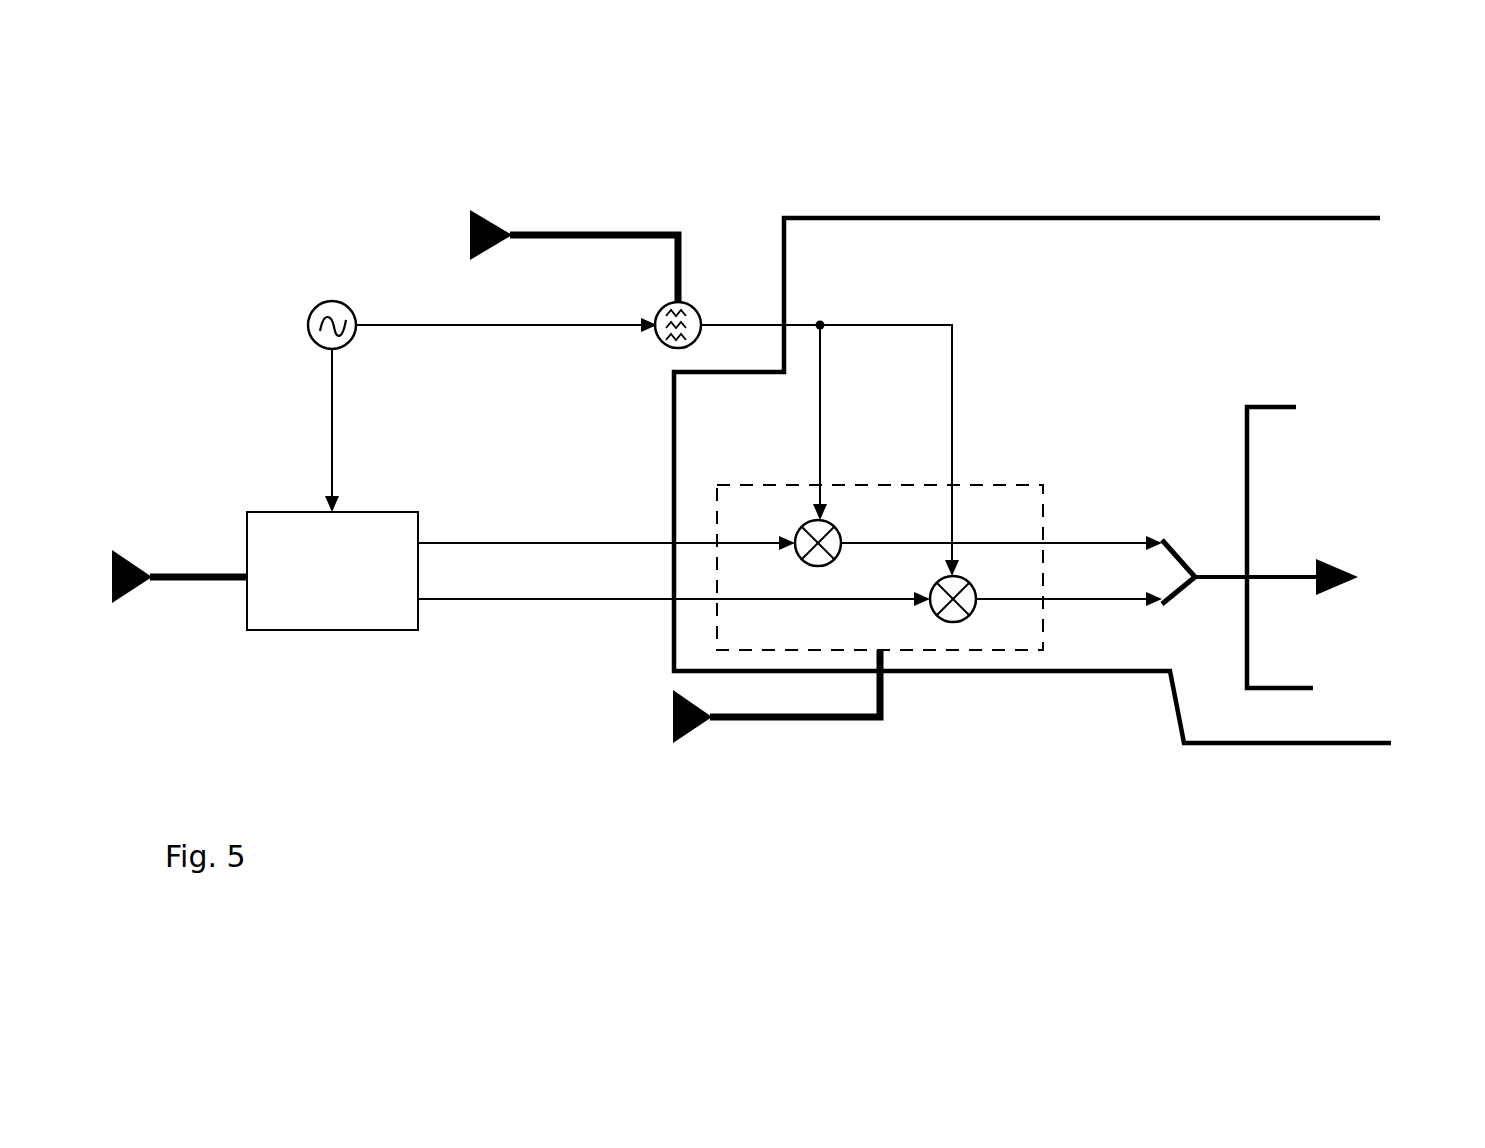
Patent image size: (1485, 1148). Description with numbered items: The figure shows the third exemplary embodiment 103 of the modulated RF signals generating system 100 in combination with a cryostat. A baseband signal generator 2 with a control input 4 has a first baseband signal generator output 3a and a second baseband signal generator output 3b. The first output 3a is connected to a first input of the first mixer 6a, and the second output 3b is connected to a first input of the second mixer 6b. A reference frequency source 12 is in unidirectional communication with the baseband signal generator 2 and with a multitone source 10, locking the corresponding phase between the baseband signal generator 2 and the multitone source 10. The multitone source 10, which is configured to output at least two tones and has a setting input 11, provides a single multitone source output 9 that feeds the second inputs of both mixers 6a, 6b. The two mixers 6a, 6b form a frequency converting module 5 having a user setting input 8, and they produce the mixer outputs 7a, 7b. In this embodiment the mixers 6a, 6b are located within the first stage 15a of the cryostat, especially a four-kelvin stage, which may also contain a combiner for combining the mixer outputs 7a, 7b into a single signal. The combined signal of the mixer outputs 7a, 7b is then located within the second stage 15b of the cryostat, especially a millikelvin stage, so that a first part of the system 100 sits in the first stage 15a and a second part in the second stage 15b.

The modulated RF signals generating system 100 is at (188, 184).
The baseband signal generator 2 is at (388, 512).
The first baseband signal generator output 3a is at (532, 543).
The second baseband signal generator output 3b is at (472, 600).
The control input 4 is at (160, 575).
The frequency converting module 5 is at (986, 484).
The first mixer 6a is at (832, 522).
The second mixer 6b is at (962, 622).
The mixer output 7a is at (1082, 543).
The mixer output 7b is at (1065, 600).
The user setting input 8 is at (780, 722).
The multitone source output 9 is at (872, 325).
The multitone source 10 is at (700, 307).
The setting input 11 is at (682, 250).
The reference frequency source 12 is at (350, 308).
The first stage 15a is at (1052, 217).
The second stage 15b is at (1270, 406).
The third exemplary embodiment 103 is at (1400, 737).